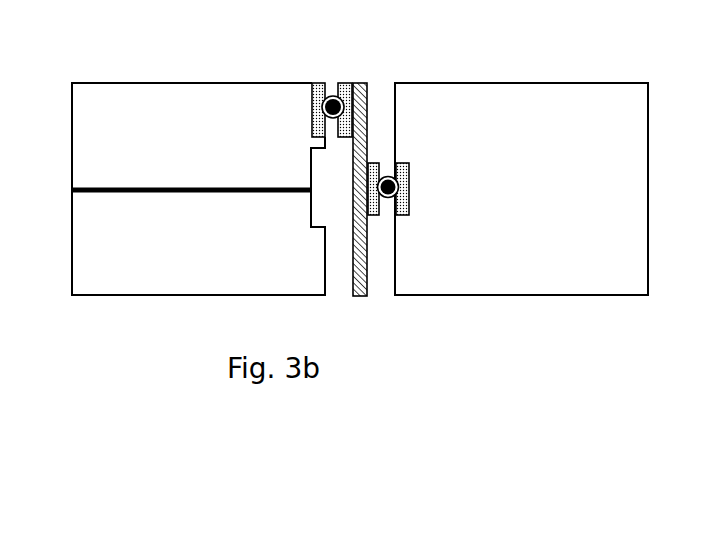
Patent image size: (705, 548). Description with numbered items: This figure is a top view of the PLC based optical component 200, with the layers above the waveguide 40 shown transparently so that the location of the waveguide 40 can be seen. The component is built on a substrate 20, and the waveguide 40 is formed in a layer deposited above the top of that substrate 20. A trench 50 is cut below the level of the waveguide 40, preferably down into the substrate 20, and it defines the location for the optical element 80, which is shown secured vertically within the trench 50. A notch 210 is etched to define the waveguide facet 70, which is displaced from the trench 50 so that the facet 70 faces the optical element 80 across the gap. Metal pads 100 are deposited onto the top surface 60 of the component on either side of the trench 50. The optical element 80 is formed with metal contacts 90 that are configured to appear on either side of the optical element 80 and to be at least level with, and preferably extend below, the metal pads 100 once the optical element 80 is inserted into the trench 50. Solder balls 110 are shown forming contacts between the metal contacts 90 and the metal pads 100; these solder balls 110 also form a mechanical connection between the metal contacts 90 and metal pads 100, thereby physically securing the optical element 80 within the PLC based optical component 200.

The PLC based optical component 200 is at (184, 64).
The substrate 20 is at (650, 193).
The waveguide 40 is at (185, 194).
The trench 50 is at (340, 282).
The top surface 60 is at (170, 283).
The waveguide facet 70 is at (312, 190).
The optical element 80 is at (357, 297).
The metal contacts 90 is at (346, 84).
The metal pads 100 is at (310, 110).
The solder balls 110 is at (332, 95).
The notch 210 is at (316, 229).